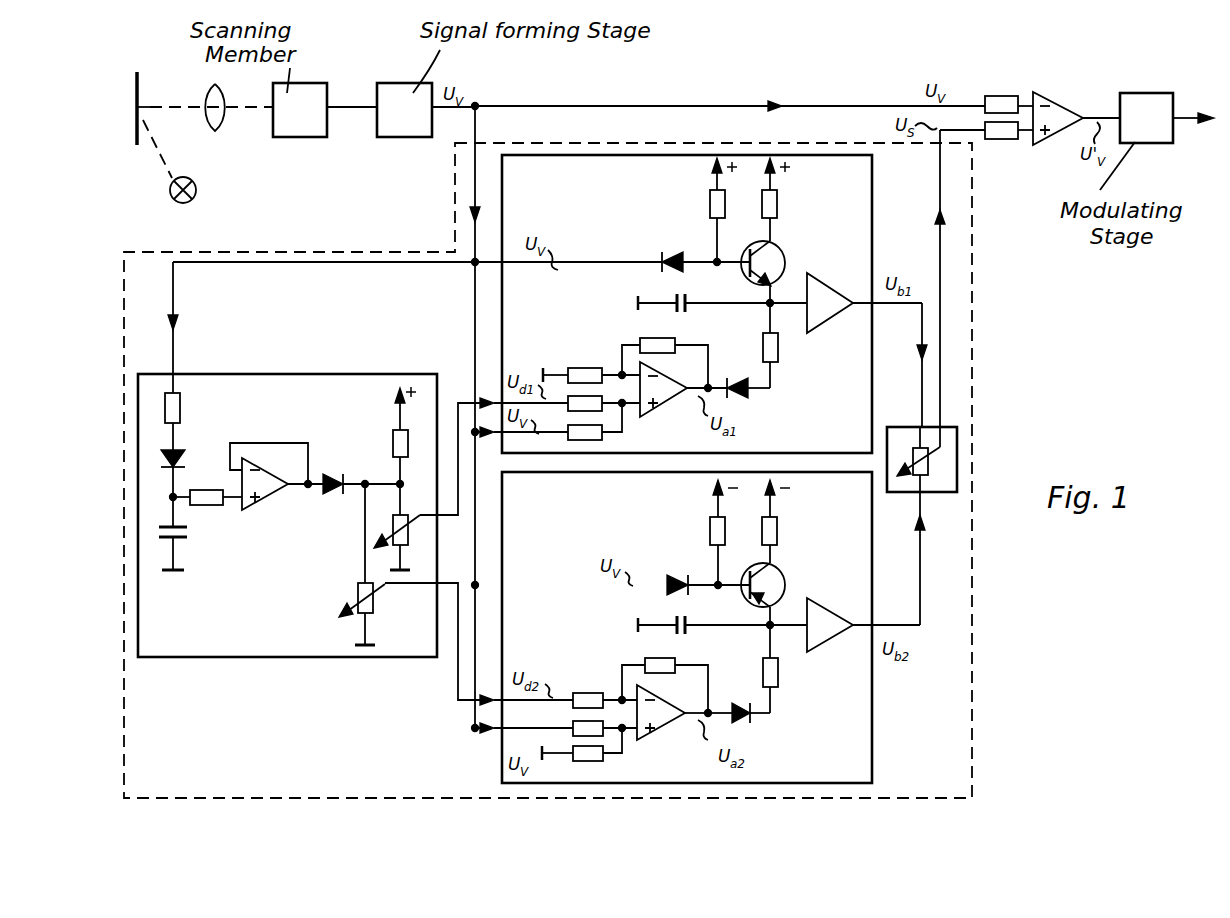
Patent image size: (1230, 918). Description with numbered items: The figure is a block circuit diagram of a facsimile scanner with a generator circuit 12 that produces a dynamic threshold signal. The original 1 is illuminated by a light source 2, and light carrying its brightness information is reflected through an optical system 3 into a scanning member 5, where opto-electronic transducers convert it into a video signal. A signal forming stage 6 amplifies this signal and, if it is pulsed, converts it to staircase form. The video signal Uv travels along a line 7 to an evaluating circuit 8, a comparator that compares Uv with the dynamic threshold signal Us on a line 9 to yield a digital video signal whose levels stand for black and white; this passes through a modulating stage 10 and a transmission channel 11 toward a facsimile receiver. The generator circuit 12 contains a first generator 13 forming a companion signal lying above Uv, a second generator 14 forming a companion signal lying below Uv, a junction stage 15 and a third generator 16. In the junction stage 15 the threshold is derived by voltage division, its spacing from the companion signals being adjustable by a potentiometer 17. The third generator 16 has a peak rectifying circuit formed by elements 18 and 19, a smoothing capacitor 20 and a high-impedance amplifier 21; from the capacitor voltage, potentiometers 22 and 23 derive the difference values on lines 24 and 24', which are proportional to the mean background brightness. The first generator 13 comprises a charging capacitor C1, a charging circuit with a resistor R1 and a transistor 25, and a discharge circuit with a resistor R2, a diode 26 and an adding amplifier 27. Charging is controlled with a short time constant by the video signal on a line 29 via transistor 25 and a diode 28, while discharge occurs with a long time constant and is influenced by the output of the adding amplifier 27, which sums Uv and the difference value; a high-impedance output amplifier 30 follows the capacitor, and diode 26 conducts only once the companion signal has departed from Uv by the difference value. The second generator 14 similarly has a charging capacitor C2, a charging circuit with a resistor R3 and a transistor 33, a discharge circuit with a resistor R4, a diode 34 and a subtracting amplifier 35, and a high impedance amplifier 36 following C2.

The original 1 is at (141, 86).
The light source 2 is at (196, 190).
The optical system 3 is at (217, 114).
The scanning member 5 is at (300, 138).
The signal forming stage 6 is at (403, 138).
The line 7 is at (668, 106).
The evaluating circuit 8 is at (1053, 148).
The line 9 is at (938, 175).
The modulating stage 10 is at (1152, 144).
The transmission channel 11 is at (1188, 122).
The generator circuit 12 is at (950, 682).
The first generator 13 is at (872, 196).
The second generator 14 is at (858, 750).
The junction stage 15 is at (895, 495).
The third generator 16 is at (218, 657).
The potentiometer 17 is at (931, 494).
The peak rectifying circuit element 18 is at (181, 406).
The peak rectifying circuit element 19 is at (180, 447).
The smoothing capacitor 20 is at (186, 538).
The high-impedance amplifier 21 is at (270, 496).
The potentiometer 22 is at (405, 501).
The potentiometer 23 is at (354, 597).
The line 24 is at (494, 428).
The line 24' is at (479, 672).
The transistor 25 is at (786, 250).
The diode 26 is at (736, 375).
The adding amplifier 27 is at (672, 400).
The diode 28 is at (672, 250).
The line 29 is at (473, 292).
The output amplifier 30 is at (834, 277).
The transistor 33 is at (786, 572).
The diode 34 is at (738, 702).
The subtracting amplifier 35 is at (670, 726).
The high impedance amplifier 36 is at (832, 610).
The resistor R1 is at (777, 204).
The resistor R2 is at (778, 350).
The resistor R3 is at (777, 530).
The resistor R4 is at (778, 676).
The charging capacitor C1 is at (676, 302).
The charging capacitor C2 is at (688, 632).